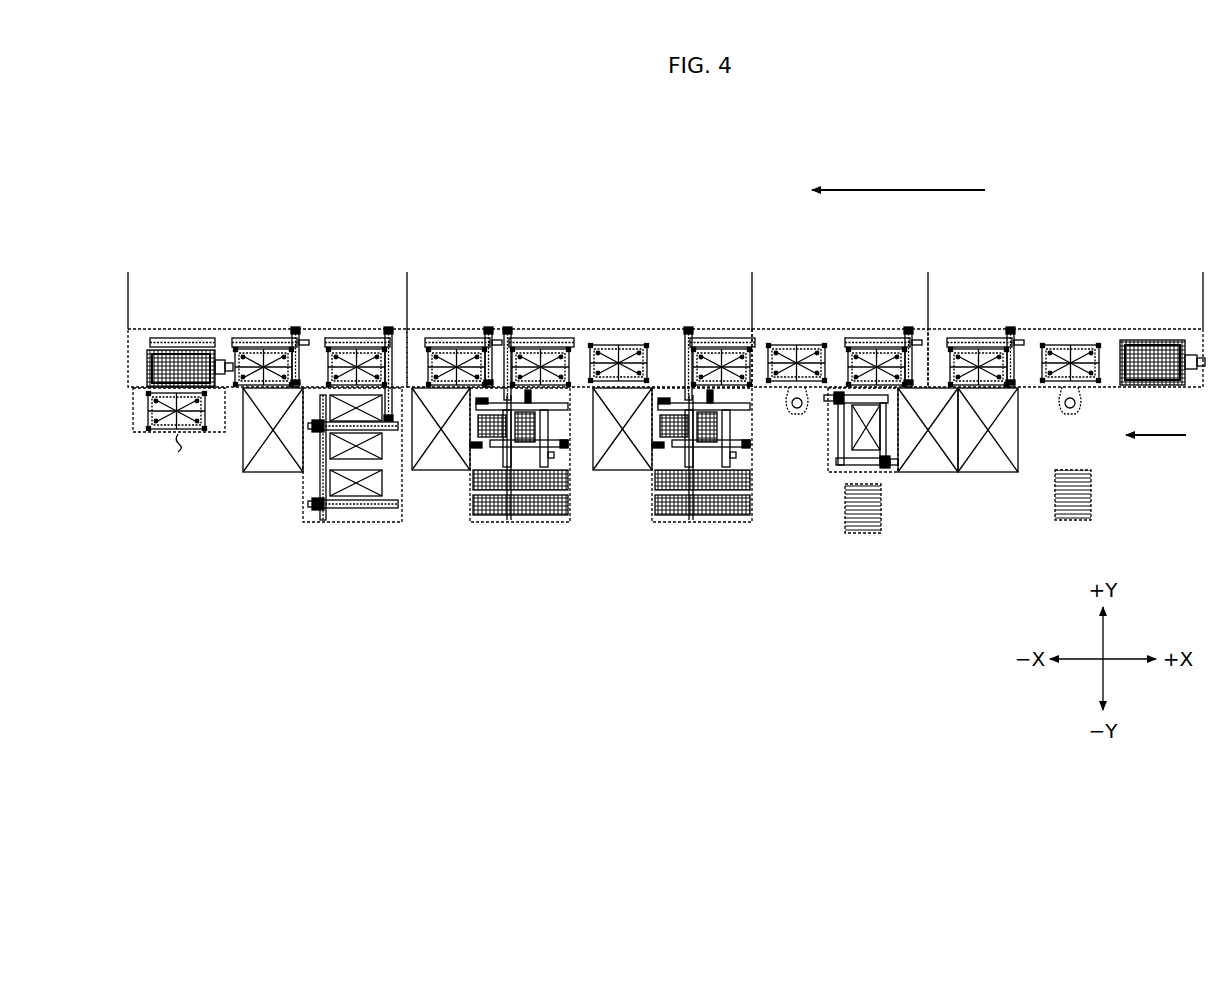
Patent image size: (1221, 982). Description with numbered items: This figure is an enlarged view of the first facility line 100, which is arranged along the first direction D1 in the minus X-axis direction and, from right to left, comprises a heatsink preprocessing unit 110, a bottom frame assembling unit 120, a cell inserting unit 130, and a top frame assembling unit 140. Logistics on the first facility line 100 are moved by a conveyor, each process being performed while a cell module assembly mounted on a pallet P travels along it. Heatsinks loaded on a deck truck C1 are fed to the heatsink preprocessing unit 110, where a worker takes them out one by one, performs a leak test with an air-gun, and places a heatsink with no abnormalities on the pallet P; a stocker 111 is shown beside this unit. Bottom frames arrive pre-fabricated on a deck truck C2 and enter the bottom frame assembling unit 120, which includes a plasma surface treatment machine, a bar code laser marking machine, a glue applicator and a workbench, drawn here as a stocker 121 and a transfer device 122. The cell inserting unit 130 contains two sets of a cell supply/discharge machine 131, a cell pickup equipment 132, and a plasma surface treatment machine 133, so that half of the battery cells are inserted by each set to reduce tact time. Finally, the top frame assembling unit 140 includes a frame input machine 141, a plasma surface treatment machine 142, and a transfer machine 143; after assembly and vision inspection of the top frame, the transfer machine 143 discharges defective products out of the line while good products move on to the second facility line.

The first facility line 100 is at (196, 208).
The heatsink preprocessing unit 110 is at (1202, 278).
The input cell stocker 111 is at (986, 474).
The bottom frame assembling unit 120 is at (753, 278).
The transfer stocker 121 is at (926, 474).
The cell transfer unit 122 is at (828, 464).
The cell inserting unit 130 is at (408, 278).
The cell supply/discharge machine 131 is at (520, 543).
The cell pickup equipment 132 is at (582, 464).
The plasma surface treatment machine 133 is at (441, 472).
The top frame assembling unit 140 is at (406, 278).
The frame input machine 141 is at (348, 524).
The plasma surface treatment machine 142 is at (275, 474).
The transfer machine 143 is at (152, 343).
The pallet P is at (1078, 345).
The deck truck C1 is at (1072, 521).
The deck truck C2 is at (862, 534).
The first direction D1 is at (921, 190).